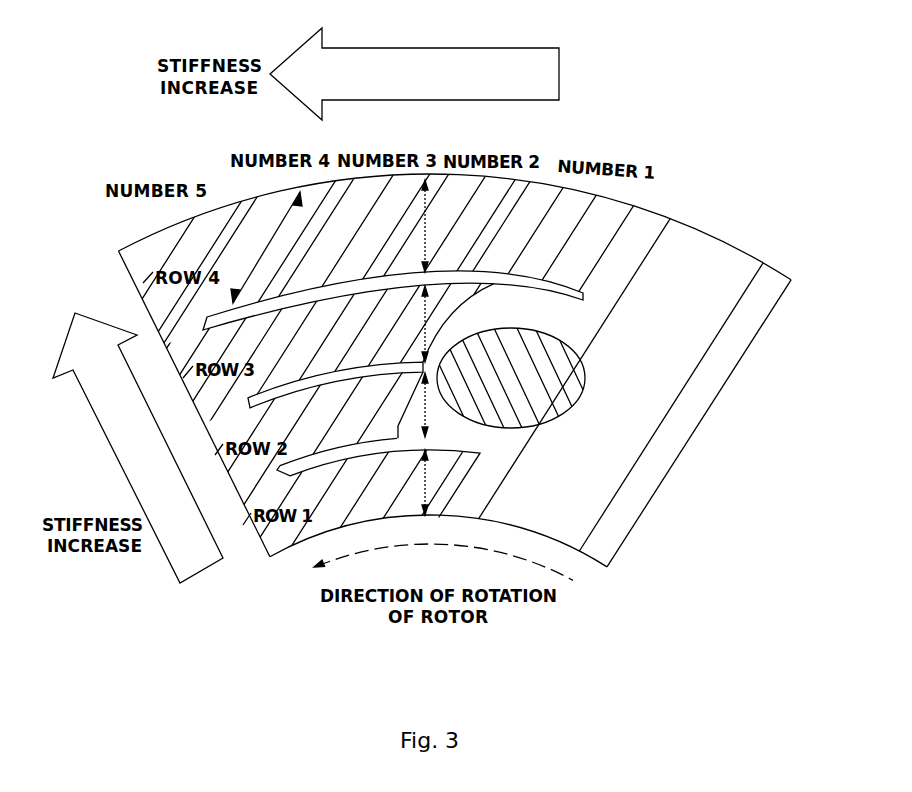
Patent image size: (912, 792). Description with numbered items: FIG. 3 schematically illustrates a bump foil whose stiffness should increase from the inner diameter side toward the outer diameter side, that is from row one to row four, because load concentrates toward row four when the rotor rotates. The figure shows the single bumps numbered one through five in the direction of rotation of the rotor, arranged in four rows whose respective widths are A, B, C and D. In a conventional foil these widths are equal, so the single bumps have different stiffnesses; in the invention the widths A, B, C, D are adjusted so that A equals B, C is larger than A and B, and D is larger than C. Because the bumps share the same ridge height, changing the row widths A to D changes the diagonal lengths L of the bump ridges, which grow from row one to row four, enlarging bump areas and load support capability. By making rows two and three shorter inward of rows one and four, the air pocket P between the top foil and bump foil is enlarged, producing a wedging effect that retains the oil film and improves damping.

The diagonal length L is at (262, 242).
The air pocket P is at (573, 407).
The width of row 1 A is at (414, 482).
The width of row 2 B is at (415, 405).
The width of row 3 C is at (414, 324).
The width of row 4 D is at (414, 226).